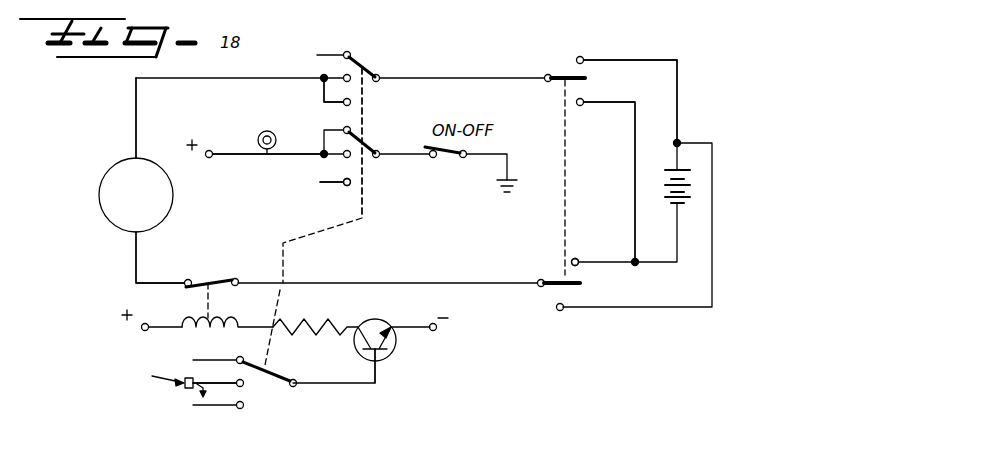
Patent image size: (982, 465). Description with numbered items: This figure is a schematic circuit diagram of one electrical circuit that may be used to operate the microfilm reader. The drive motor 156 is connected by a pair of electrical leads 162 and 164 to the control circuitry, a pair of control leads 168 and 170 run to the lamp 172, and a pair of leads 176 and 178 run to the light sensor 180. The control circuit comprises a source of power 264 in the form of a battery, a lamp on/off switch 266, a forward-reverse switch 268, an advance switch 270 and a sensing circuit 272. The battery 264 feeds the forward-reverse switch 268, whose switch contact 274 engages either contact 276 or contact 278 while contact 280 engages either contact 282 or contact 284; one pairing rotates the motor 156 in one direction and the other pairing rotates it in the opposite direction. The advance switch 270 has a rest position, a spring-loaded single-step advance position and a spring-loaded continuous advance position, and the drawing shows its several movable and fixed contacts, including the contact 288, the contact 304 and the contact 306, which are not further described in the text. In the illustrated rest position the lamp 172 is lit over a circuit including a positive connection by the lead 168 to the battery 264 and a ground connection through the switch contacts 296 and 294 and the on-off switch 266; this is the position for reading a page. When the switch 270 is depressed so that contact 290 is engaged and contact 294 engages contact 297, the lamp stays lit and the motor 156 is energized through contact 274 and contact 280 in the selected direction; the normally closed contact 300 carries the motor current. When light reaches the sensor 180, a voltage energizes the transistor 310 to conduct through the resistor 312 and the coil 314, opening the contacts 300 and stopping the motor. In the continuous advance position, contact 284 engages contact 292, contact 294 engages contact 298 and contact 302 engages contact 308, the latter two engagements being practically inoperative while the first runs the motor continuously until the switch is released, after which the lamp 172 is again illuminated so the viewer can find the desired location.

The drive motor 156 is at (110, 207).
The electrical lead 162 is at (136, 107).
The electrical lead 164 is at (128, 260).
The control lead 168 is at (207, 159).
The control lead 170 is at (278, 158).
The lamp 172 is at (258, 135).
The lead 176 is at (194, 379).
The lead 178 is at (196, 392).
The light sensor 180 is at (185, 388).
The source of power 264 is at (677, 205).
The lamp on/off switch 266 is at (447, 160).
The forward-reverse switch 268 is at (575, 50).
The advance switch 270 is at (405, 30).
The sensing circuit 272 is at (392, 376).
The switch contact 274 is at (563, 74).
The contact 276 is at (589, 58).
The contact 278 is at (583, 106).
The contact 280 is at (556, 278).
The contact 282 is at (578, 259).
The contact 284 is at (365, 72).
The switch blade 288 is at (343, 52).
The contact 290 is at (352, 95).
The contact 292 is at (327, 104).
The switch contact 294 is at (365, 150).
The switch contact 296 is at (352, 126).
The contact 297 is at (340, 160).
The contact 298 is at (343, 186).
The contact 300 is at (215, 278).
The contact 302 is at (290, 388).
The contact 304 is at (238, 356).
The contact 306 is at (243, 390).
The contact 308 is at (238, 410).
The transistor 310 is at (395, 352).
The resistor 312 is at (326, 325).
The coil 314 is at (188, 318).